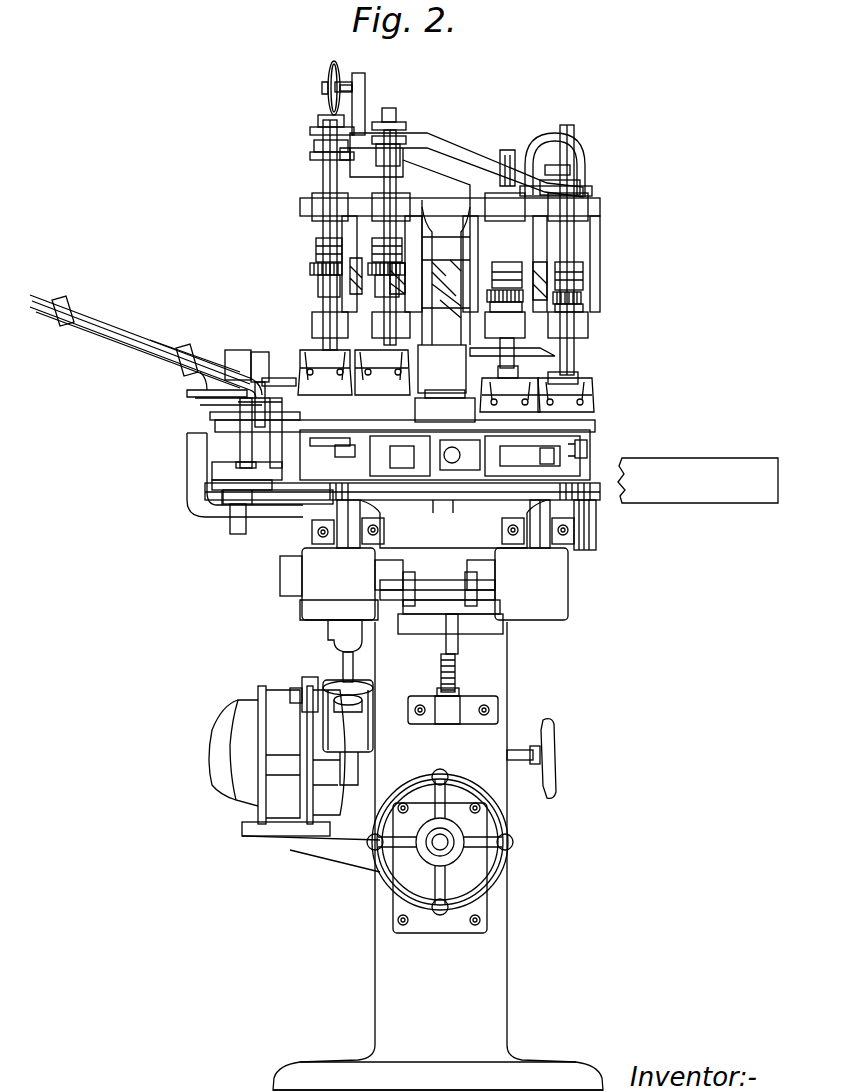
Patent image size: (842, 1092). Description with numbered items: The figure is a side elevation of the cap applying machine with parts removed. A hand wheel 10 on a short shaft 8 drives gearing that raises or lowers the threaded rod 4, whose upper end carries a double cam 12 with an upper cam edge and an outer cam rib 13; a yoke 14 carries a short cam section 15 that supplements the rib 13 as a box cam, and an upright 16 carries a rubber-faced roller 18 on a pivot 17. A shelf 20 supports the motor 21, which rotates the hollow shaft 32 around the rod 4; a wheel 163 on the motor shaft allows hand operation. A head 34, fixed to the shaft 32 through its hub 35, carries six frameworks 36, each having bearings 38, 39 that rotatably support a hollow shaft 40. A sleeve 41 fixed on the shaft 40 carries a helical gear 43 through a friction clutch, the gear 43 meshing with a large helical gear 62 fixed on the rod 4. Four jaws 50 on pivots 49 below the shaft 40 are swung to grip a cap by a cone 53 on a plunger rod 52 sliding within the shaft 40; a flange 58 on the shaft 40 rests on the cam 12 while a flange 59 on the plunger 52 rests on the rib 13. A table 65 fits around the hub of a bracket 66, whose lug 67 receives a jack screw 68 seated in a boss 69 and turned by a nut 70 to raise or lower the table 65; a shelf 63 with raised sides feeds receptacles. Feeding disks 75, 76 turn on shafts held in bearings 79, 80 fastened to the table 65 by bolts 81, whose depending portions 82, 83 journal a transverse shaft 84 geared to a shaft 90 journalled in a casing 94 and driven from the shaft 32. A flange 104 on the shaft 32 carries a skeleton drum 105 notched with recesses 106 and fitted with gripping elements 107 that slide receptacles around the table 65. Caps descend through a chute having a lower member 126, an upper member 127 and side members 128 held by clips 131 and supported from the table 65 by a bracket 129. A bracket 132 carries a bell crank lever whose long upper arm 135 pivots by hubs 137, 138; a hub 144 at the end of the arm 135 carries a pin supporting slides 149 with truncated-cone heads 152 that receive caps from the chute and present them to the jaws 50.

The rod 4 is at (440, 215).
The short shaft 8 is at (436, 846).
The hand wheel 10 is at (510, 845).
The double cam 12 is at (436, 136).
The cam rib 13 is at (425, 140).
The yoke 14 is at (548, 134).
The short cam section 15 is at (590, 189).
The upright 16 is at (365, 102).
The pivot 17 is at (320, 87).
The roller 18 is at (334, 62).
The shelf 20 is at (290, 840).
The motor 21 is at (244, 795).
The hollow shaft 32 is at (440, 410).
The head 34 is at (520, 352).
The hub 35 is at (442, 369).
The frameworks 36 is at (555, 232).
The bearing 38 is at (580, 208).
The bearing 39 is at (588, 326).
The hollow shaft 40 is at (323, 168).
The sleeve 41 is at (318, 280).
The helical gear 43 is at (310, 268).
The pivot 49 is at (578, 398).
The jaw 50 is at (355, 392).
The plunger rod 52 is at (396, 112).
The cone 53 is at (512, 372).
The flange 58 is at (318, 120).
The flange 59 is at (314, 133).
The helical gear 62 is at (547, 278).
The shelf 63 is at (698, 480).
The table 65 is at (596, 548).
The bracket 66 is at (470, 620).
The lug 67 is at (456, 648).
The jack screw 68 is at (441, 666).
The boss 69 is at (445, 722).
The nut 70 is at (437, 690).
The feeding disk 75 is at (300, 500).
The feeding disk 76 is at (595, 496).
The bearing 79 is at (340, 538).
The bearing 80 is at (545, 542).
The bolts 81 is at (318, 534).
The depending portion 82 is at (341, 584).
The depending portion 83 is at (517, 584).
The transverse shaft 84 is at (448, 590).
The shaft 90 is at (343, 660).
The casing 94 is at (348, 732).
The flange 104 is at (445, 406).
The skeleton drum 105 is at (405, 419).
The recesses 106 is at (392, 458).
The gripping element 107 is at (587, 449).
The lower member 126 is at (175, 350).
The upper member 127 is at (145, 338).
The side members 128 is at (108, 328).
The bracket 129 is at (187, 466).
The clips 131 is at (62, 326).
The bracket 132 is at (232, 497).
The upper arm 135 is at (262, 380).
The hub 137 is at (245, 358).
The hub 138 is at (230, 474).
The hub 144 is at (258, 355).
The slides 149 is at (238, 410).
The head 152 is at (220, 398).
The wheel 163 is at (556, 718).